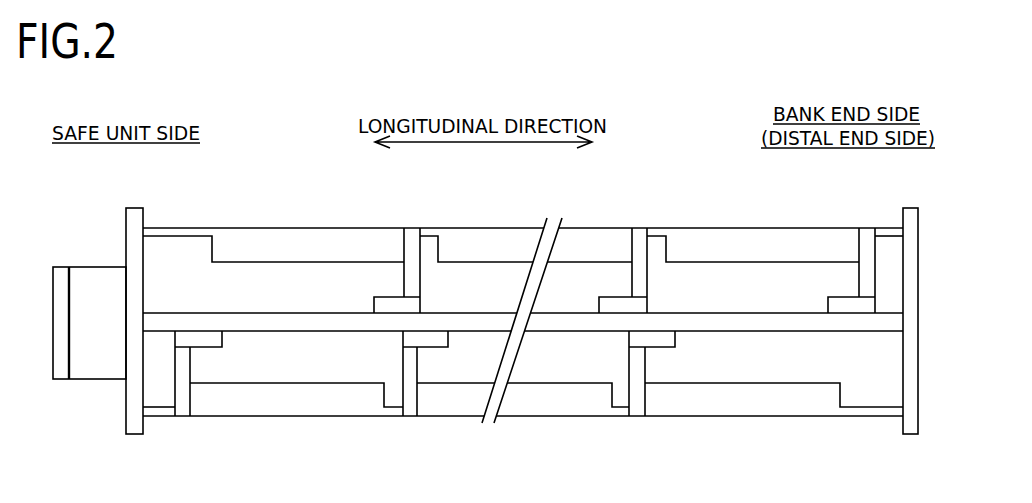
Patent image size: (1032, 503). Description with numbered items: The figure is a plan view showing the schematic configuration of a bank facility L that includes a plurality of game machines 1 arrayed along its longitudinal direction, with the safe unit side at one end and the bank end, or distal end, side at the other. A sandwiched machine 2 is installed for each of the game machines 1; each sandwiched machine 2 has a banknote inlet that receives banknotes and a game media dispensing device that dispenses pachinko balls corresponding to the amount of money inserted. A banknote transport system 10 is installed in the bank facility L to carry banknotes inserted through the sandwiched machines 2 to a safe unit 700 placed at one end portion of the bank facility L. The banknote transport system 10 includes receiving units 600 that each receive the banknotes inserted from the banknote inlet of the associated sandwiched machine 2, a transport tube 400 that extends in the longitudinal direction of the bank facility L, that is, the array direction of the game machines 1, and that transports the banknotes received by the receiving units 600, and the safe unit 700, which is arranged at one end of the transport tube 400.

The game machine 1 is at (303, 235).
The sandwiched machine 2 is at (412, 233).
The banknote transport system 10 is at (448, 300).
The transport tube 400 is at (658, 314).
The receiving unit 600 is at (387, 297).
The safe unit 700 is at (92, 275).
The bank facility L is at (667, 185).